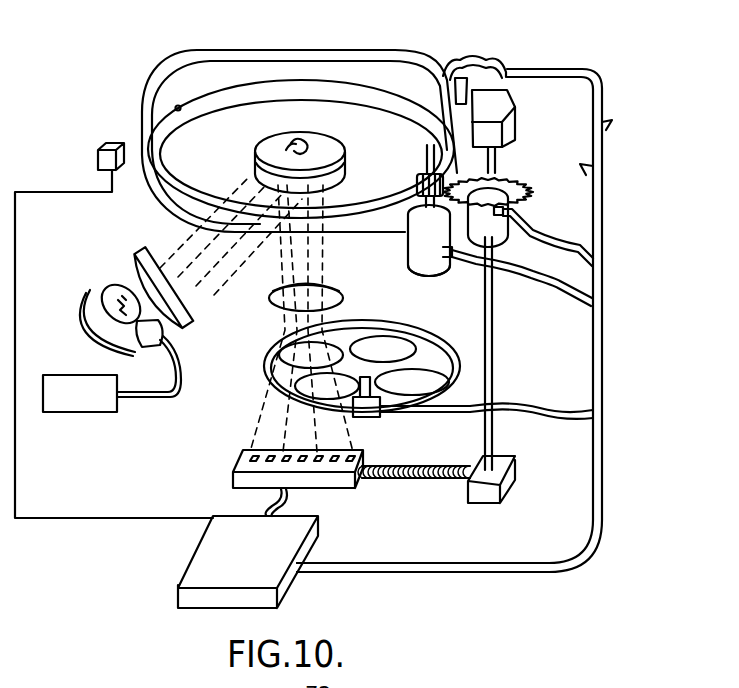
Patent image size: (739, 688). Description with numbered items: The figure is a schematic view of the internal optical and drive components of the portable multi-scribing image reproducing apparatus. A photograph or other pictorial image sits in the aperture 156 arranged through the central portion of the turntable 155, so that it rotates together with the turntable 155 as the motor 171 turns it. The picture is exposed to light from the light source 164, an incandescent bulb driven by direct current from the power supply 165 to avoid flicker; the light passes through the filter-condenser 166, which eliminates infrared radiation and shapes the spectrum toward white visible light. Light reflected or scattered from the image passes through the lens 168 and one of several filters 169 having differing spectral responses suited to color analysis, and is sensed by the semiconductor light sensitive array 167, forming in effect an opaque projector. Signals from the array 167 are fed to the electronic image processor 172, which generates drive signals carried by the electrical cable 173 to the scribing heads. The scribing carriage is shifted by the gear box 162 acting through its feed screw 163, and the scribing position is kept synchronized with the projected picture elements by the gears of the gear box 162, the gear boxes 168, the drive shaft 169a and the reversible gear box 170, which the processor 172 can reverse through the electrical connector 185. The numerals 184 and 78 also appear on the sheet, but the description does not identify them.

The turntable 155 is at (291, 88).
The aperture 156 is at (335, 153).
The gear box 162 is at (491, 98).
The feed screw 163 is at (466, 96).
The light source 164 is at (115, 295).
The power supply 165 is at (97, 405).
The filter-condenser 166 is at (190, 298).
The light sensitive array 167 is at (242, 458).
The lens 168 is at (328, 295).
The filters 169 is at (272, 392).
The drive shaft 169a is at (491, 324).
The gear box 170 is at (505, 203).
The motor 171 is at (418, 240).
The image processor 172 is at (205, 568).
The electrical cable 173 is at (600, 328).
The switch 184 is at (97, 147).
The electrical connector 185 is at (560, 233).
The element 78 is at (600, 687).